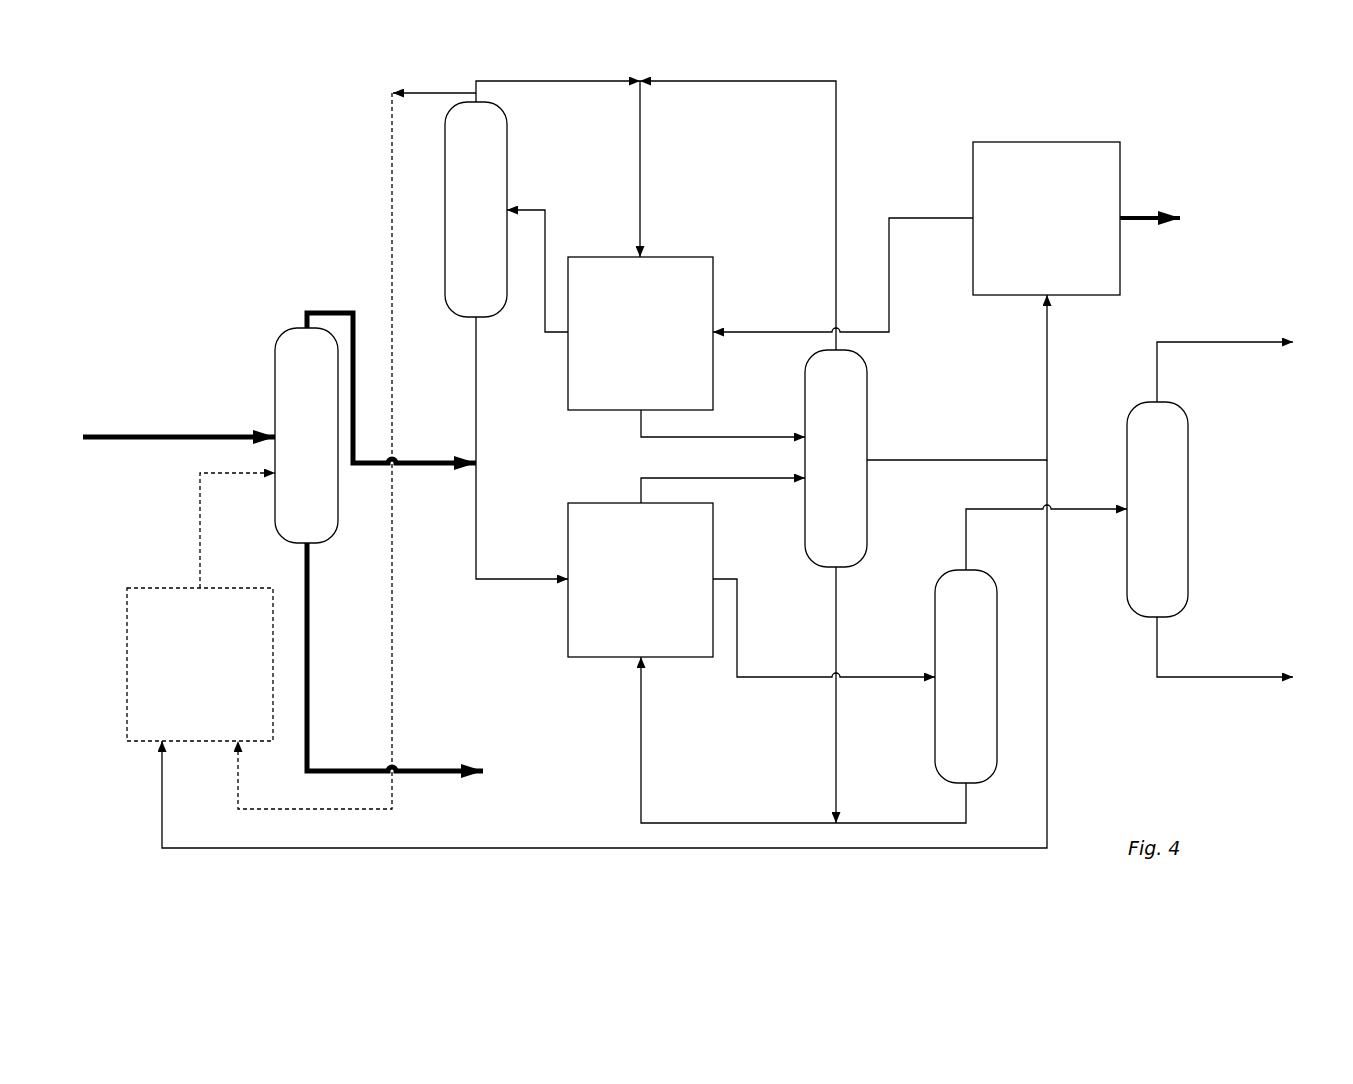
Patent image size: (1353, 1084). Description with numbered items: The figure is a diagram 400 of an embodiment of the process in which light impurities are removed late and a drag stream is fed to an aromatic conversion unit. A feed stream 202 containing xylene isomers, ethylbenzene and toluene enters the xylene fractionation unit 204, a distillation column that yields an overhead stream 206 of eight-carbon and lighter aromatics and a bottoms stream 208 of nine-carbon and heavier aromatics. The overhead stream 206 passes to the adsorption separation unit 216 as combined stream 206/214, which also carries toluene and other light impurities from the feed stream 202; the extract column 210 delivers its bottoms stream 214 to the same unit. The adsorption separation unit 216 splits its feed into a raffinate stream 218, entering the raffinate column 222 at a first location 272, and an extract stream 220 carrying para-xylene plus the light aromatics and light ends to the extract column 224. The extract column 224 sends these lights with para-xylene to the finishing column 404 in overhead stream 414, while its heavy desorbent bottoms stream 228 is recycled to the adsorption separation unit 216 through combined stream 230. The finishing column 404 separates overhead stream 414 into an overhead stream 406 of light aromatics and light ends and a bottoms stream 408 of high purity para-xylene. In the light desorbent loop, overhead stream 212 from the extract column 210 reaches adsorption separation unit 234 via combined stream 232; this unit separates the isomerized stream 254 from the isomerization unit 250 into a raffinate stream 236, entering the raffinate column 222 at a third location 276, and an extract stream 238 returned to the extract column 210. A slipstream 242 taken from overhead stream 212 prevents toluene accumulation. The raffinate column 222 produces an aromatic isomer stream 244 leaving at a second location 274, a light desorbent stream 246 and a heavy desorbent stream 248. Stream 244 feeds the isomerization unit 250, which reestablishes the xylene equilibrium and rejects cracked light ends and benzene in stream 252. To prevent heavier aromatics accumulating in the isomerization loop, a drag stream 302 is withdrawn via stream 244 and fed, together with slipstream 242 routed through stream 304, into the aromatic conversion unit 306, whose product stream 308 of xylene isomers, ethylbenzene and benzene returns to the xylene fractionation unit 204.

The diagram 400 is at (1218, 93).
The feed stream 202 is at (190, 435).
The xylene fractionation unit 204 is at (306, 435).
The overhead stream 206 is at (330, 313).
The bottoms stream 208 is at (308, 635).
The extract column 210 is at (476, 209).
The overhead stream 212 is at (520, 82).
The bottoms stream 214 is at (477, 392).
The adsorption separation unit 216 is at (640, 580).
The raffinate stream 218 is at (665, 478).
The extract stream 220 is at (770, 677).
The raffinate column 222 is at (836, 458).
The extract column 224 is at (966, 676).
The bottoms stream 228 is at (943, 825).
The combined stream 230 is at (641, 805).
The combined stream 232 is at (641, 175).
The adsorption separation unit 234 is at (640, 333).
The raffinate stream 236 is at (665, 437).
The extract stream 238 is at (545, 205).
The slipstream 242 is at (453, 93).
The C8 aromatic isomer stream 244 is at (1047, 433).
The light desorbent stream 246 is at (837, 125).
The heavy desorbent stream 248 is at (837, 617).
The isomerization unit 250 is at (1046, 218).
The stream 252 is at (1138, 216).
The isomerized product stream 254 is at (890, 315).
The first location 272 is at (800, 478).
The second location 274 is at (867, 458).
The third location 276 is at (800, 437).
The drag stream 302 is at (1047, 730).
The stream 304 is at (392, 145).
The aromatic conversion unit 306 is at (200, 664).
The aromatic conversion product stream 308 is at (200, 520).
The finishing column 404 is at (1157, 509).
The overhead stream 406 is at (1203, 342).
The bottoms stream 408 is at (1203, 677).
The overhead stream 414 is at (1005, 507).